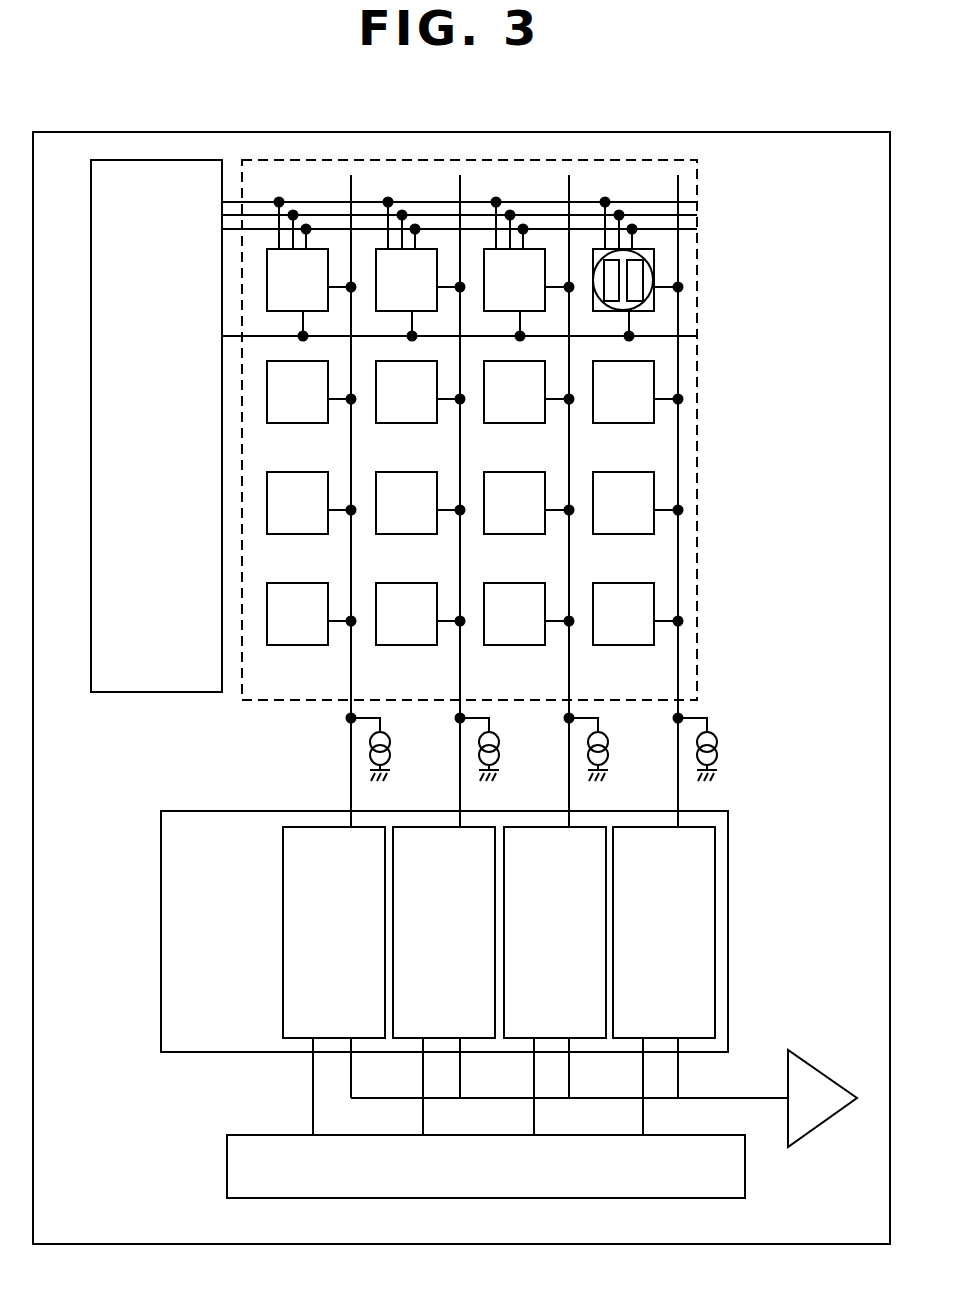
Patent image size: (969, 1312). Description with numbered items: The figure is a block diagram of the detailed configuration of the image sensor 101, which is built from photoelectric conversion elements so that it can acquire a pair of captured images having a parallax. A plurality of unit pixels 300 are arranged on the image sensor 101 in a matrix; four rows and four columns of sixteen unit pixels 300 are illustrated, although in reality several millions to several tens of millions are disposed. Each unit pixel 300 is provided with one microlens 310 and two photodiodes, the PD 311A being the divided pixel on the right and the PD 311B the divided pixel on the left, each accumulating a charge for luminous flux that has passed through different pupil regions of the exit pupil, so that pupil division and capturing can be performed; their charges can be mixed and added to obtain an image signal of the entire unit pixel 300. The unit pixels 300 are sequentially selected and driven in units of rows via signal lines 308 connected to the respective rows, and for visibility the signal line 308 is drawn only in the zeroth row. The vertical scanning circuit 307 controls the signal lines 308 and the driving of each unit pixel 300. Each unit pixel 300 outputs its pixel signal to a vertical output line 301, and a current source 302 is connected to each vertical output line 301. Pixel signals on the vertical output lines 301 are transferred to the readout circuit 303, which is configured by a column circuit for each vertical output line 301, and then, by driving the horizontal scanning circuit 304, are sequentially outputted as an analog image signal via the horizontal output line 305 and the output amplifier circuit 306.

The image sensor 101 is at (155, 132).
The unit pixel 300 is at (303, 423).
The vertical output line 301 is at (351, 772).
The current source 302 is at (389, 737).
The readout circuit 303 is at (161, 893).
The horizontal scanning circuit 304 is at (227, 1172).
The horizontal output line 305 is at (758, 1096).
The output amplifier circuit 306 is at (810, 1063).
The vertical scanning circuit 307 is at (143, 692).
The signal line 308 is at (692, 215).
The microlens 310 is at (653, 262).
The photodiode (divided pixel on the right) 311A is at (618, 302).
The photodiode (divided pixel on the left) 311B is at (634, 302).